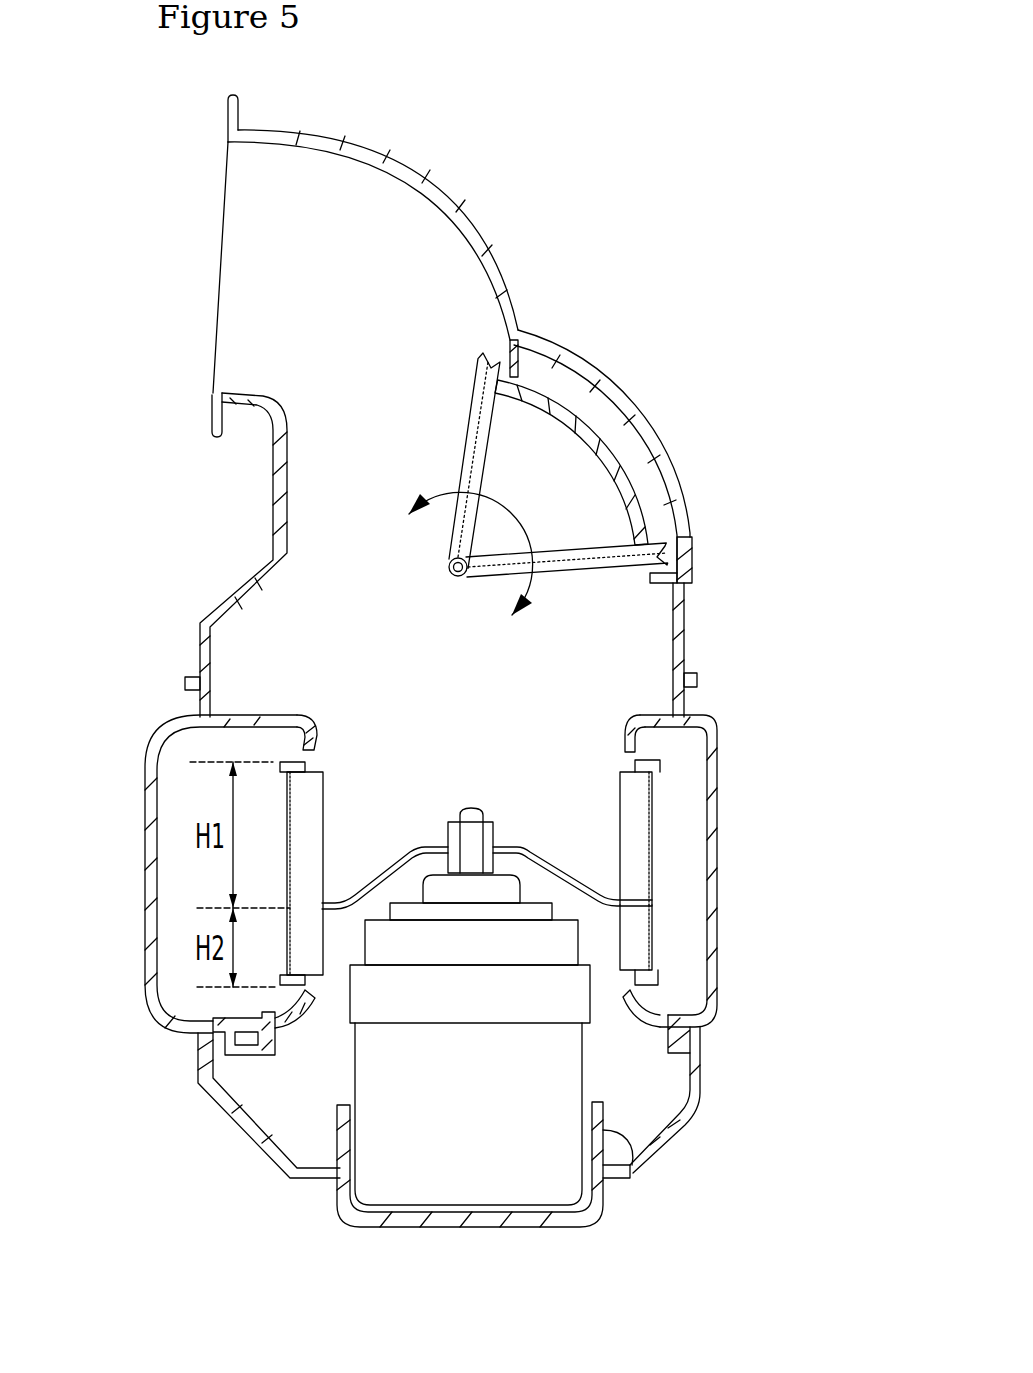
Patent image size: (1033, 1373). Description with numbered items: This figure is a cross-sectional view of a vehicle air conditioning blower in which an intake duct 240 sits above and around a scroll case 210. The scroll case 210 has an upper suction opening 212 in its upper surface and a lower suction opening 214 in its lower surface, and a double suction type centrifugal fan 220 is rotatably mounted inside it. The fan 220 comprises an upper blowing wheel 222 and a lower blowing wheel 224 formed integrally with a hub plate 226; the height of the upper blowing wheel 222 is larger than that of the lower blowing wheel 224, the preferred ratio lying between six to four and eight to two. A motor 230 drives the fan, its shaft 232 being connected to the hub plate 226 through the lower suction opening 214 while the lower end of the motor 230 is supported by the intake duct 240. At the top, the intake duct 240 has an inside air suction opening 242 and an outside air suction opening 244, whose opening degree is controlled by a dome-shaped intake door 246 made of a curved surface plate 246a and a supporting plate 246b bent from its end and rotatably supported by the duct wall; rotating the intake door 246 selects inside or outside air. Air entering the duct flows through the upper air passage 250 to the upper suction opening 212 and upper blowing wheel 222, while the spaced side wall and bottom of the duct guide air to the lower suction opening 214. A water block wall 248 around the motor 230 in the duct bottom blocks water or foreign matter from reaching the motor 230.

The scroll case 210 is at (727, 735).
The upper suction opening 212 is at (327, 740).
The lower suction opening 214 is at (313, 1020).
The double suction type centrifugal fan 220 is at (717, 872).
The upper blowing wheel 222 is at (640, 877).
The lower blowing wheel 224 is at (630, 937).
The hub plate 226 is at (552, 870).
The motor 230 is at (500, 1167).
The shaft 232 is at (470, 808).
The intake duct 240 is at (192, 623).
The inside air suction opening 242 is at (608, 388).
The outside air suction opening 244 is at (253, 190).
The intake door 246 is at (640, 478).
The curved surface plate 246a is at (640, 517).
The supporting plate 246b is at (563, 527).
The water block wall 248 is at (632, 1178).
The upper air passage 250 is at (420, 665).